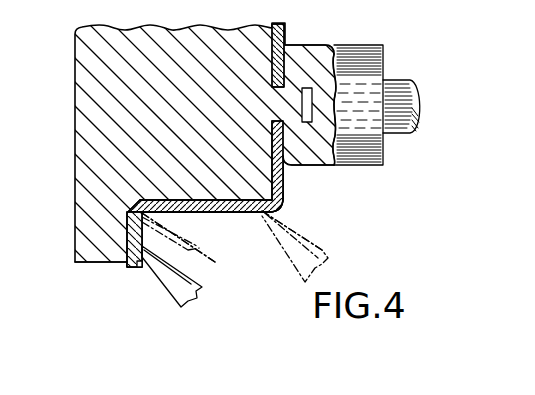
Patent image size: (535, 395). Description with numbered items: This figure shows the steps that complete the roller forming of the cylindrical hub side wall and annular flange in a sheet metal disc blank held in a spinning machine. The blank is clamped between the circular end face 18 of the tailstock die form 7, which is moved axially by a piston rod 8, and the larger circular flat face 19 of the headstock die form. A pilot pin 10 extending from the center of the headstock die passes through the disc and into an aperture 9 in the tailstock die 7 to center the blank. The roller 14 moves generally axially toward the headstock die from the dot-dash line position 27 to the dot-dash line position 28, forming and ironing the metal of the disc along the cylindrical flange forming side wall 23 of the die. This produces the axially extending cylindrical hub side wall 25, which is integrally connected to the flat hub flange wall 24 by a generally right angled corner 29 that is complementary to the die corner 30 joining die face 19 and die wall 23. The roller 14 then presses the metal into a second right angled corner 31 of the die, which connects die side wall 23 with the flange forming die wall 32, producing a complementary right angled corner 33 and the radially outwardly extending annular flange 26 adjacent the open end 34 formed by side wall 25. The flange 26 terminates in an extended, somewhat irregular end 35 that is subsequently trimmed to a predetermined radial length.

The die form 7 is at (370, 63).
The piston rod 8 is at (402, 123).
The aperture 9 is at (312, 96).
The pilot pin 10 is at (292, 103).
The roller 14 is at (170, 290).
The circular end face 18 is at (330, 137).
The circular flat face 19 is at (270, 63).
The cylindrical flange forming side wall 23 is at (178, 200).
The hub flange wall 24 is at (283, 33).
The cylindrical hub side wall 25 is at (224, 214).
The annular flange 26 is at (133, 228).
The dot-dash line position 27 is at (310, 235).
The dot-dash line position 28 is at (218, 266).
The right angled corner 29 is at (275, 208).
The die corner 30 is at (259, 184).
The second right angled corner 31 is at (138, 201).
The flange forming die wall 32 is at (110, 258).
The right angled corner 33 is at (133, 204).
The open end 34 is at (141, 198).
The irregular end 35 is at (137, 270).